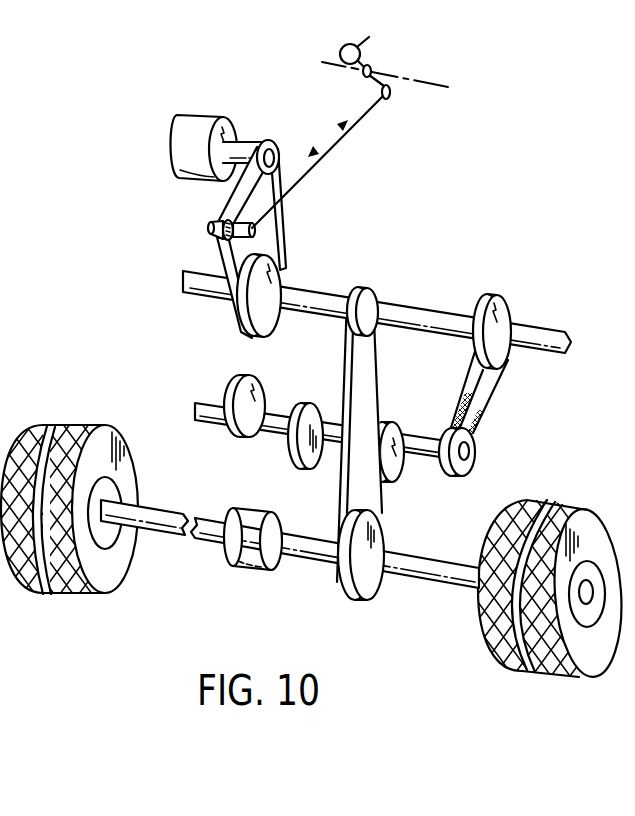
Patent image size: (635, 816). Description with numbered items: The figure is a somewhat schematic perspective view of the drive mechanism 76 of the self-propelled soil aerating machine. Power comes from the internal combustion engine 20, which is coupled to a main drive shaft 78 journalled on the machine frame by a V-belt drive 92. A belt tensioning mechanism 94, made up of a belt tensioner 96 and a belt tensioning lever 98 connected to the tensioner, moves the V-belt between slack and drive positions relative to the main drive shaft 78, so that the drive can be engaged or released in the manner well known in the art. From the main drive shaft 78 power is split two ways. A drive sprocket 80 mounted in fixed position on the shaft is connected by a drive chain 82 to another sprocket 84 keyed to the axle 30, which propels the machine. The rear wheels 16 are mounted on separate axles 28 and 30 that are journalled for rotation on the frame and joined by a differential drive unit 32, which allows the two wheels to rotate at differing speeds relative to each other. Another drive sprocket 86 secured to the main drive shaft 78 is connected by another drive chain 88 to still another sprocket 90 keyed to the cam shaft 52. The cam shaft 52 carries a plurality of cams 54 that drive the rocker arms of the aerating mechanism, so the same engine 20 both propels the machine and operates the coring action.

The rear wheels 16 is at (92, 428).
The internal combustion engine 20 is at (182, 157).
The axle 28 is at (147, 511).
The axle 30 is at (402, 560).
The differential drive unit 32 is at (250, 520).
The cam shaft 52 is at (217, 411).
The cams 54 is at (290, 442).
The drive mechanism 76 is at (388, 239).
The main drive shaft 78 is at (303, 296).
The drive sprocket 80 is at (378, 292).
The drive chain 82 is at (343, 352).
The sprocket 84 is at (367, 580).
The drive sprocket 86 is at (502, 312).
The drive chain 88 is at (488, 412).
The sprocket 90 is at (472, 468).
The V-belt drive 92 is at (297, 211).
The belt tensioning mechanism 94 is at (388, 60).
The belt tensioner 96 is at (208, 226).
The belt tensioning lever 98 is at (334, 46).